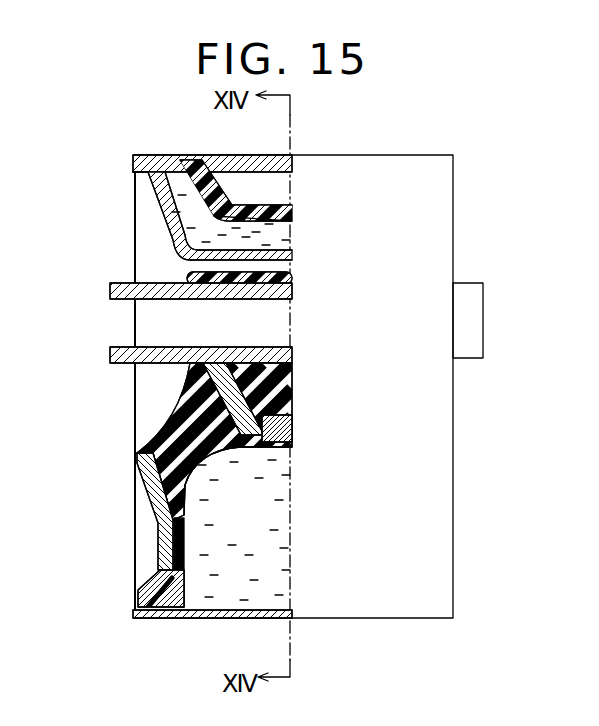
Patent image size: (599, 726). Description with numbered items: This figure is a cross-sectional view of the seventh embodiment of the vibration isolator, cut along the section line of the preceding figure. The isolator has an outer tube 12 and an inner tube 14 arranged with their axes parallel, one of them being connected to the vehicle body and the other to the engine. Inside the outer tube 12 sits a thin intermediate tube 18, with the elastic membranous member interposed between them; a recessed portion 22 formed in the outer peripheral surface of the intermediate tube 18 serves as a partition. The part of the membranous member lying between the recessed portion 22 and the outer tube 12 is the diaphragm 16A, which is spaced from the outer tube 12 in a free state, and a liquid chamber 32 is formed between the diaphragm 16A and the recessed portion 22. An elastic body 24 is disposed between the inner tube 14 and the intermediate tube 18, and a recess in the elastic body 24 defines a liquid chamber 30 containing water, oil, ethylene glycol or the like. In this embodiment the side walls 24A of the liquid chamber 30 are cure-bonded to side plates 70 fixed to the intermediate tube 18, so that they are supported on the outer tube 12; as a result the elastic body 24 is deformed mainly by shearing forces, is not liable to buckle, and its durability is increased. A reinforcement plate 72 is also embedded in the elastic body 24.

The outer tube 12 is at (200, 618).
The inner tube 14 is at (468, 283).
The diaphragm 16A is at (352, 195).
The intermediate tube 18 is at (158, 587).
The recessed portion 22 is at (292, 254).
The elastic body 24 is at (193, 376).
The side walls 24A is at (187, 497).
The liquid chamber 30 is at (268, 542).
The liquid chamber 32 is at (266, 194).
The side plates 70 is at (136, 479).
The reinforcement plate 72 is at (284, 436).